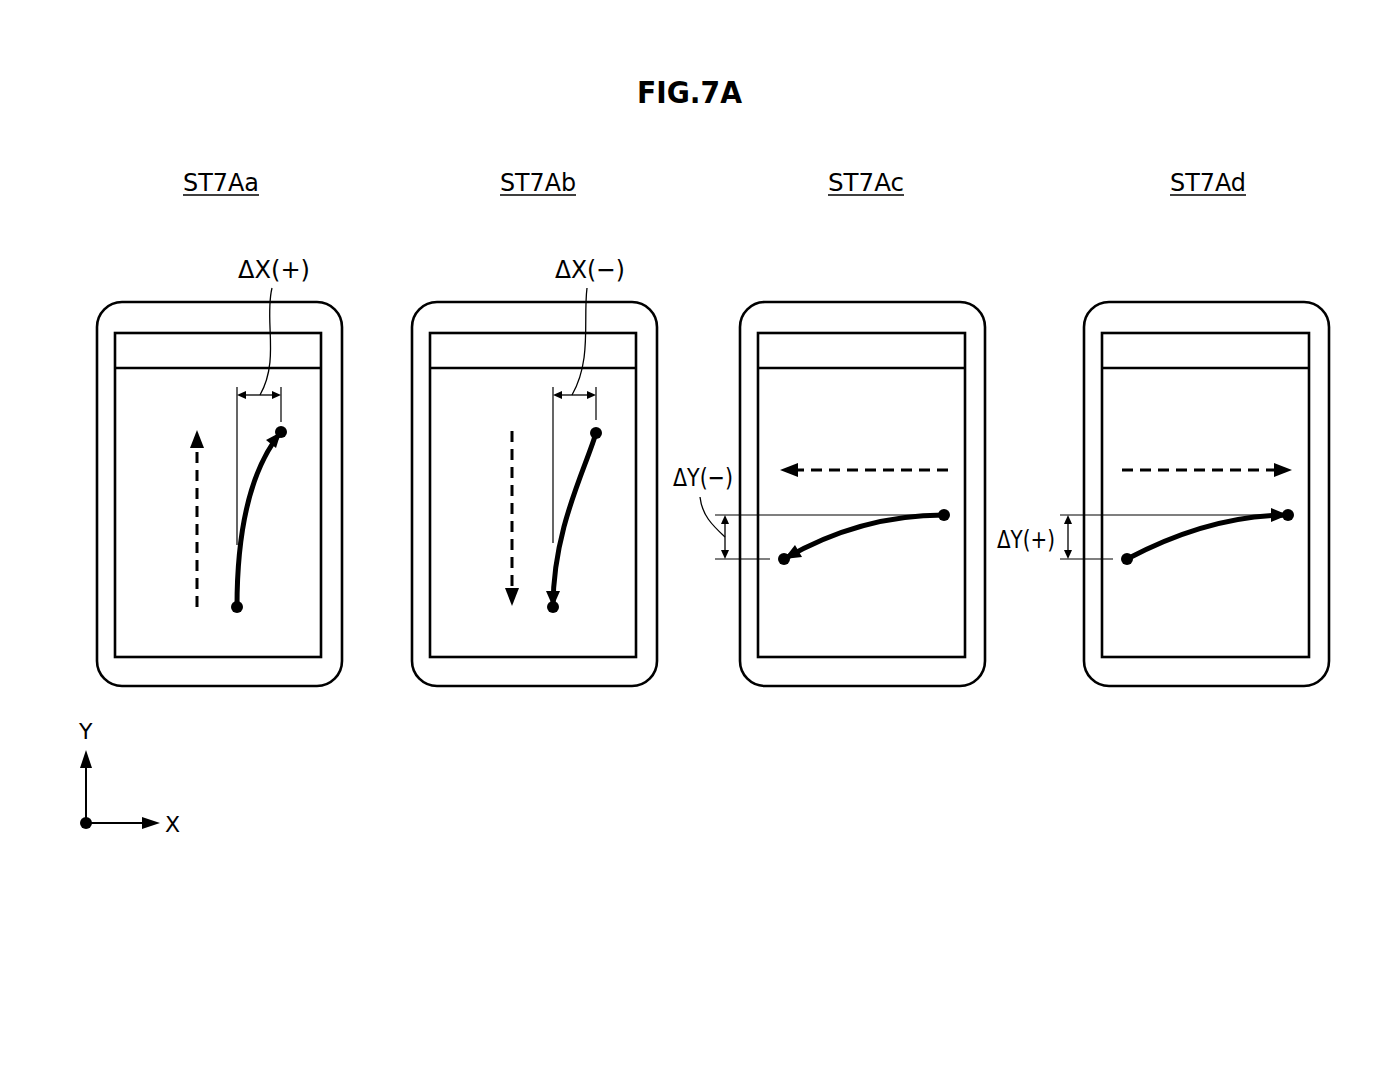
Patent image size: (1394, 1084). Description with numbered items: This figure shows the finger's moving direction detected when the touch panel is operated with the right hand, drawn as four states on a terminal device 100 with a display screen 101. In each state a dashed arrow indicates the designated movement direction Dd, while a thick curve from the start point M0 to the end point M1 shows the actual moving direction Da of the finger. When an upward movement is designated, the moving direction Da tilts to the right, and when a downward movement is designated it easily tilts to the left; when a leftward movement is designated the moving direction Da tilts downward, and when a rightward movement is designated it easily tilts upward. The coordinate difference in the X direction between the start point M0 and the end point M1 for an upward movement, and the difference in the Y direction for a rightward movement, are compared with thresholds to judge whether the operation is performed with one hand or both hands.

The terminal device 100 is at (713, 462).
The display screen 101 is at (712, 460).
The start point M0 is at (589, 510).
The end point M1 is at (708, 510).
The moving direction Da is at (666, 583).
The display movement direction Dd is at (668, 436).